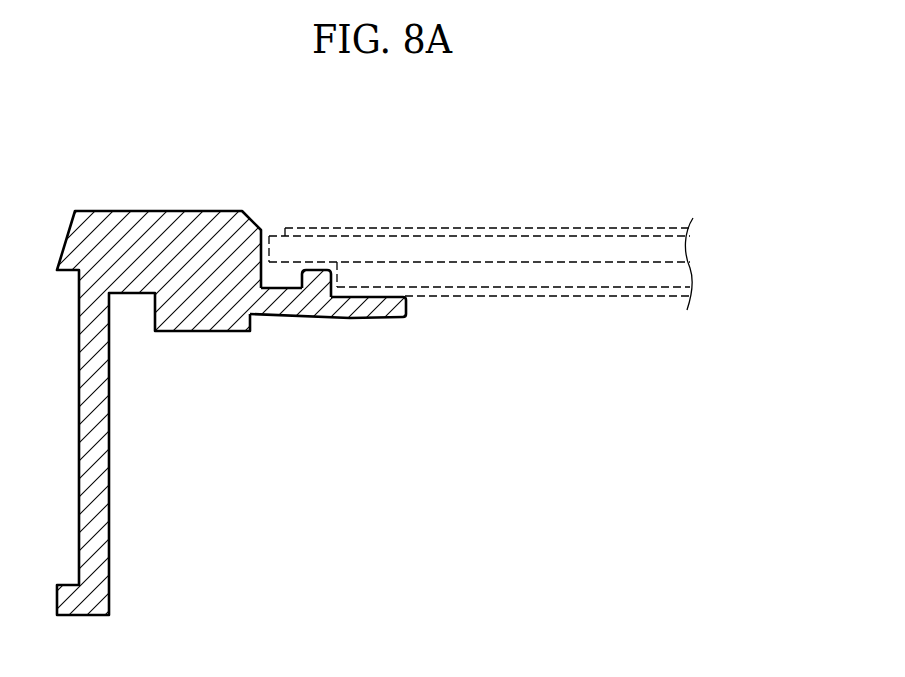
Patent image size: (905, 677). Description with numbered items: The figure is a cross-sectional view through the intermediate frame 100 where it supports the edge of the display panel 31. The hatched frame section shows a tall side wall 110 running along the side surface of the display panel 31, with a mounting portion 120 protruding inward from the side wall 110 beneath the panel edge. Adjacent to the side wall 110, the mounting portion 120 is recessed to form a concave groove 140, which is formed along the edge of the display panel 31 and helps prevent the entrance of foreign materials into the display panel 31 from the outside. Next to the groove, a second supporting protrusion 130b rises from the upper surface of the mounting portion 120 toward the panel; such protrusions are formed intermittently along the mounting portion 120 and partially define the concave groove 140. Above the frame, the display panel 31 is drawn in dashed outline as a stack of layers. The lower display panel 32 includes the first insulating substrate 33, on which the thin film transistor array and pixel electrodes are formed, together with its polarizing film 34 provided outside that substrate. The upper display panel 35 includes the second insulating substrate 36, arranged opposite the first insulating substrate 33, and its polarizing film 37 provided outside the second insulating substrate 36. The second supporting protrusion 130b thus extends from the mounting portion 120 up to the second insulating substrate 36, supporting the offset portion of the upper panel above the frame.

The display panel 31 is at (481, 202).
The lower display panel 32 is at (479, 214).
The first insulating substrate 33 is at (500, 277).
The polarizing film 34 is at (542, 292).
The upper display panel 35 is at (479, 197).
The second insulating substrate 36 is at (442, 252).
The polarizing film 37 is at (396, 233).
The intermediate frame 100 is at (260, 410).
The side wall 110 is at (97, 397).
The mounting portion 120 is at (250, 413).
The second supporting protrusion 130b is at (317, 277).
The concave groove 140 is at (270, 281).